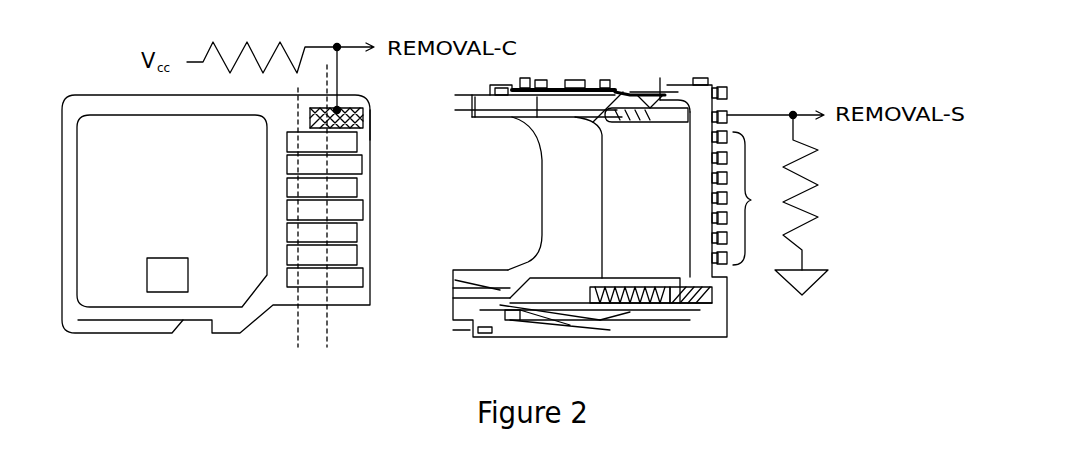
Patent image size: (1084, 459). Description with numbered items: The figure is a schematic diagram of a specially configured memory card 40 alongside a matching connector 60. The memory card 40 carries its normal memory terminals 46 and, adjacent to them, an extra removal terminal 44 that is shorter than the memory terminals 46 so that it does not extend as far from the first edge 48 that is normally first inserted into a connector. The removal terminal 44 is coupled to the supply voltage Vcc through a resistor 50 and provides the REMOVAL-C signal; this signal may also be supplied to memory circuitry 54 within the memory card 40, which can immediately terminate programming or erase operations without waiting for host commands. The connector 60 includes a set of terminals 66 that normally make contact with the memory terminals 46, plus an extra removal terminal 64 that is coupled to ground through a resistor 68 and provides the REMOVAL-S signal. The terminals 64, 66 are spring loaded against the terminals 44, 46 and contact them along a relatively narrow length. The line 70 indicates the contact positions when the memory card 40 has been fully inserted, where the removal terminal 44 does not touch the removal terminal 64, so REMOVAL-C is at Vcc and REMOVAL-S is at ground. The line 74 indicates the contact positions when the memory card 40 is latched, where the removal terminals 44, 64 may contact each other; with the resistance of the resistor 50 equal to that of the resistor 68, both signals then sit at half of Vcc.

The memory card 40 is at (177, 220).
The removal terminal 44 is at (345, 110).
The memory terminals 46 is at (372, 292).
The first edge 48 is at (372, 125).
The resistor 50 is at (247, 42).
The memory circuitry 54 is at (179, 288).
The connector 60 is at (654, 198).
The removal terminal 64 is at (726, 112).
The set of terminals 66 is at (754, 198).
The resistor 68 is at (811, 219).
The line 70 is at (297, 318).
The line 74 is at (329, 316).